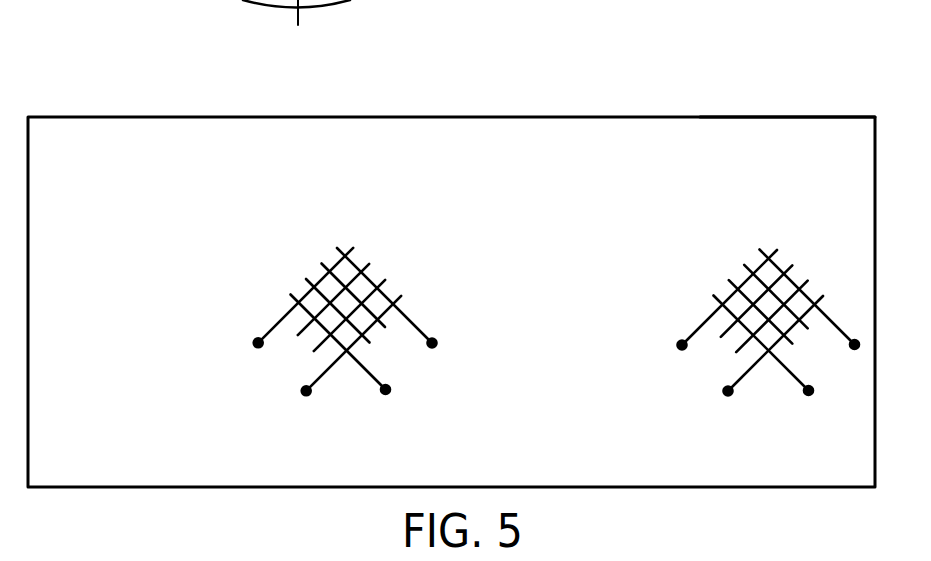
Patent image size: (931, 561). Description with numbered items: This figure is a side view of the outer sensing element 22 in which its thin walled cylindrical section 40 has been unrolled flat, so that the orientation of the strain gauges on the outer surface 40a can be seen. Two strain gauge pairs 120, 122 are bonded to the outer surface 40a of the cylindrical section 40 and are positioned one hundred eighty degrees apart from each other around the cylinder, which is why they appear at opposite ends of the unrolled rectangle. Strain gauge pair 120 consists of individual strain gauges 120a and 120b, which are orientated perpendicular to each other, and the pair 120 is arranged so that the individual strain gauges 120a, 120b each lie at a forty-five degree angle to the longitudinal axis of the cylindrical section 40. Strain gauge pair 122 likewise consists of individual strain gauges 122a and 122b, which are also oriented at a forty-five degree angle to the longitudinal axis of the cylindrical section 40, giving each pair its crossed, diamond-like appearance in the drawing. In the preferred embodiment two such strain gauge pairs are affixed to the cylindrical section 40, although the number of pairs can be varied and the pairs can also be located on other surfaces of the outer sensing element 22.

The outer sensing element 22 is at (142, 86).
The cylindrical section 40 is at (625, 112).
The outer surface 40a is at (783, 146).
The strain gauge pair 120 is at (295, 266).
The individual strain gauge 120a is at (270, 335).
The individual strain gauge 120b is at (417, 334).
The strain gauge pair 122 is at (722, 260).
The individual strain gauge 122a is at (698, 334).
The individual strain gauge 122b is at (840, 338).